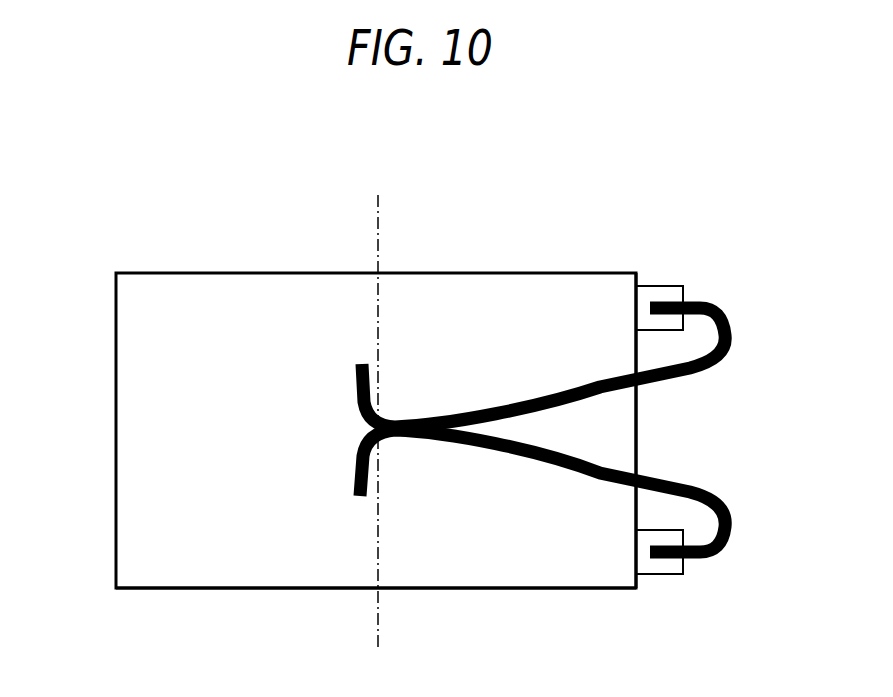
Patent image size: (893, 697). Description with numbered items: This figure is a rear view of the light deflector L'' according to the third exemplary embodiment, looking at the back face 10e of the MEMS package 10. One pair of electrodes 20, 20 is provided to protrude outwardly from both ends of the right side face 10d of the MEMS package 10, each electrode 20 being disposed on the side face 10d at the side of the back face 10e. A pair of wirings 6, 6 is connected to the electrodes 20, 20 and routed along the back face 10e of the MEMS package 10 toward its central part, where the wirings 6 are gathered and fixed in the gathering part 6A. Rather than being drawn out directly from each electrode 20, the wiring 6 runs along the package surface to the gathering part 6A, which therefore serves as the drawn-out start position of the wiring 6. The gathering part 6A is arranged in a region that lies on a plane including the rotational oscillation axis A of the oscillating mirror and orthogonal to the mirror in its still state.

The MEMS package 10 is at (115, 441).
The right side face of the MEMS package 10d is at (638, 428).
The back face of the MEMS package 10e is at (210, 562).
The wiring 6 is at (708, 366).
The gathering part 6A is at (385, 440).
The electrode 20 is at (662, 286).
The rotational oscillation axis A is at (378, 230).
The light deflector L'' is at (575, 221).